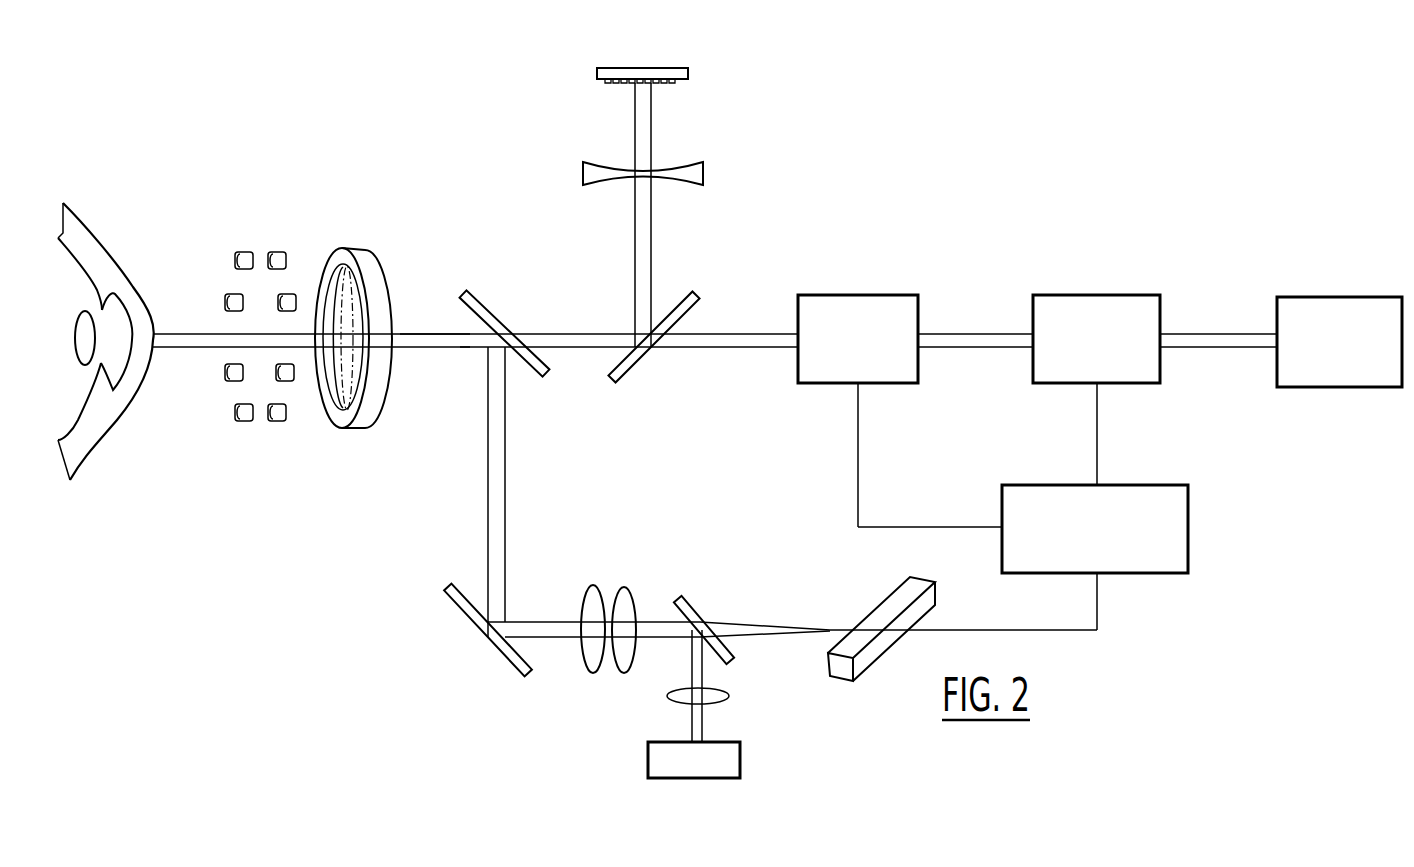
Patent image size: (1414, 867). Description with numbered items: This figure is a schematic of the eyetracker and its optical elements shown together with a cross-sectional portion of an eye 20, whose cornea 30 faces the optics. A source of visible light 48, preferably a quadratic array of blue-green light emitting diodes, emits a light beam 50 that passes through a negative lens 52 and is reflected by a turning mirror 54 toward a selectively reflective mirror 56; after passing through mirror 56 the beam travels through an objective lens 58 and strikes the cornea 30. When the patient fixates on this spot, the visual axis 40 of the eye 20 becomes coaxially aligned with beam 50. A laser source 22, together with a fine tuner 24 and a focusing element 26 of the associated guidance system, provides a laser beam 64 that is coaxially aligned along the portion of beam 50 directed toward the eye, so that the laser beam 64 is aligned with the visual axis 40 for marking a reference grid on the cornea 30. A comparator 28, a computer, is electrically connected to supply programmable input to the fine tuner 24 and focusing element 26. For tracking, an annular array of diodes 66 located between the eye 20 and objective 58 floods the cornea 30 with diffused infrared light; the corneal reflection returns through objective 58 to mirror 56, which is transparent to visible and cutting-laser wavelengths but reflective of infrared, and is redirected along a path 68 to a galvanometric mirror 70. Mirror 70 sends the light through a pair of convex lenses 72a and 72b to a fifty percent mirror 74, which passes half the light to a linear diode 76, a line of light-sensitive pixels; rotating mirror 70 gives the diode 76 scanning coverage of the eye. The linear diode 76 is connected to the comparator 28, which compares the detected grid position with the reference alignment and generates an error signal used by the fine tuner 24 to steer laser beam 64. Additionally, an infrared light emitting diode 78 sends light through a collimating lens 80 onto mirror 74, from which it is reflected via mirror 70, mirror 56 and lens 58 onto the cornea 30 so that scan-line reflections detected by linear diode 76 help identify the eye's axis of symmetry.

The eye 20 is at (97, 242).
The cornea 30 is at (140, 367).
The annular array of diodes 66 is at (271, 211).
The objective lens 58 is at (348, 280).
The light beam 50 is at (465, 337).
The visual axis 40 is at (440, 342).
The laser beam 64 is at (448, 342).
The selectively reflective mirror 56 is at (477, 307).
The turning mirror 54 is at (692, 298).
The negative lens 52 is at (705, 173).
The source of visible light 48 is at (683, 78).
The focusing element 26 is at (857, 302).
The fine tuner 24 is at (1092, 305).
The laser source 22 is at (1320, 305).
The comparator 28 is at (1133, 493).
The path 68 is at (500, 478).
The galvanometric mirror 70 is at (462, 608).
The convex lens 72a is at (624, 590).
The convex lens 72b is at (594, 590).
The 50% mirror 74 is at (683, 607).
The linear diode 76 is at (923, 598).
The collimating lens 80 is at (718, 697).
The infrared light emitting diode 78 is at (723, 748).